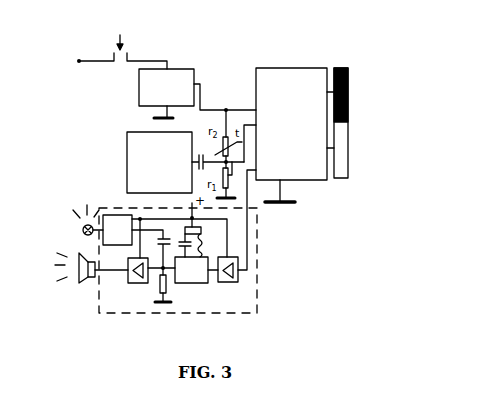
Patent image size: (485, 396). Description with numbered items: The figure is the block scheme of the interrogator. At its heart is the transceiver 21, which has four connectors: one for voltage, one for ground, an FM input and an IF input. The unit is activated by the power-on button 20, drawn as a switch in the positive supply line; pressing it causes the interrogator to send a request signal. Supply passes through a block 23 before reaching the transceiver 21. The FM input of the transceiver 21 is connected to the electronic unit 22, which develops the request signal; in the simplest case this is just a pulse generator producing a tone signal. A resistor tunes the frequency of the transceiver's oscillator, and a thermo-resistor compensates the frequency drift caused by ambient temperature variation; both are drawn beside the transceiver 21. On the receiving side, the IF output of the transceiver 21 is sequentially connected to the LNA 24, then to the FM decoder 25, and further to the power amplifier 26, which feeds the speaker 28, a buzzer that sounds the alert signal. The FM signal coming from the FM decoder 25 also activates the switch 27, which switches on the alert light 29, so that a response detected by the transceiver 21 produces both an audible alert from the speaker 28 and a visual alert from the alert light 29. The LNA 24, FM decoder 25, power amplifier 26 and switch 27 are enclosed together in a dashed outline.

The power-on button 20 is at (128, 46).
The transceiver 21 is at (270, 63).
The electronic unit 22 is at (125, 132).
The voltage regulator 23 is at (182, 66).
The LNA 24 is at (235, 288).
The FM decoder 25 is at (189, 284).
The power amplifier 26 is at (137, 288).
The switch 27 is at (119, 213).
The speaker 28 is at (92, 283).
The alert light 29 is at (80, 207).